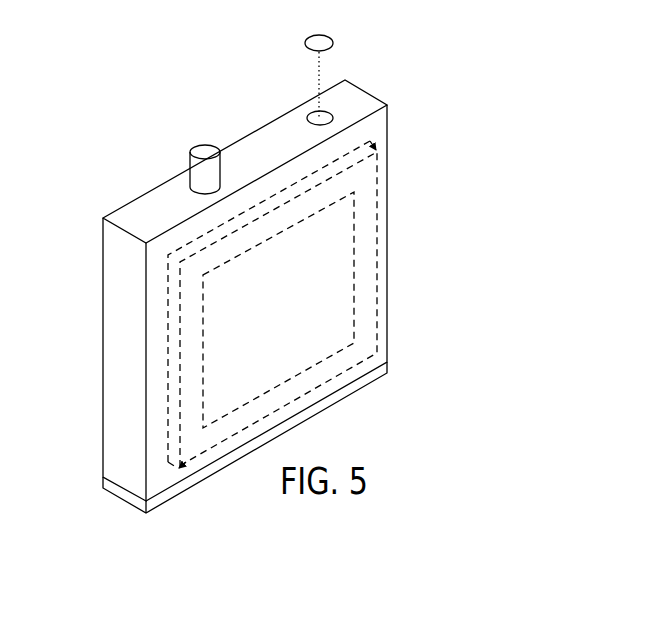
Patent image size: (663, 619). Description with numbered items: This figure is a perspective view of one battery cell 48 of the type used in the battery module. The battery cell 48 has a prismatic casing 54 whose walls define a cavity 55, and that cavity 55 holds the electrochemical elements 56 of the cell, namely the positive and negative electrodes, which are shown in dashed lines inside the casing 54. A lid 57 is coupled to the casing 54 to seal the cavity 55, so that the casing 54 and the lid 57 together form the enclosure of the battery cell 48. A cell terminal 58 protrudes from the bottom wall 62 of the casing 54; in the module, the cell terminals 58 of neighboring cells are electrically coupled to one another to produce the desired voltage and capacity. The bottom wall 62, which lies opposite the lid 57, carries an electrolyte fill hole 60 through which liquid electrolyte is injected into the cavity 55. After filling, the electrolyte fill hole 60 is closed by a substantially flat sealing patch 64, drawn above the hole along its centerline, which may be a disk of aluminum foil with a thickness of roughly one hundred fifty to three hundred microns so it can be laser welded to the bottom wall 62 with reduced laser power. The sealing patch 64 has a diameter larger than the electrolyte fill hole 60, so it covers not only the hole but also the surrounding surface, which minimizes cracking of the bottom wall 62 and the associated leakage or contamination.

The battery cell 48 is at (437, 54).
The casing 54 is at (103, 352).
The cavity 55 is at (380, 204).
The electrochemical elements 56 is at (355, 266).
The lid 57 is at (124, 505).
The cell terminals 58 is at (203, 144).
The electrolyte fill hole 60 is at (330, 113).
The bottom wall 62 is at (160, 186).
The sealing patch 64 is at (330, 37).